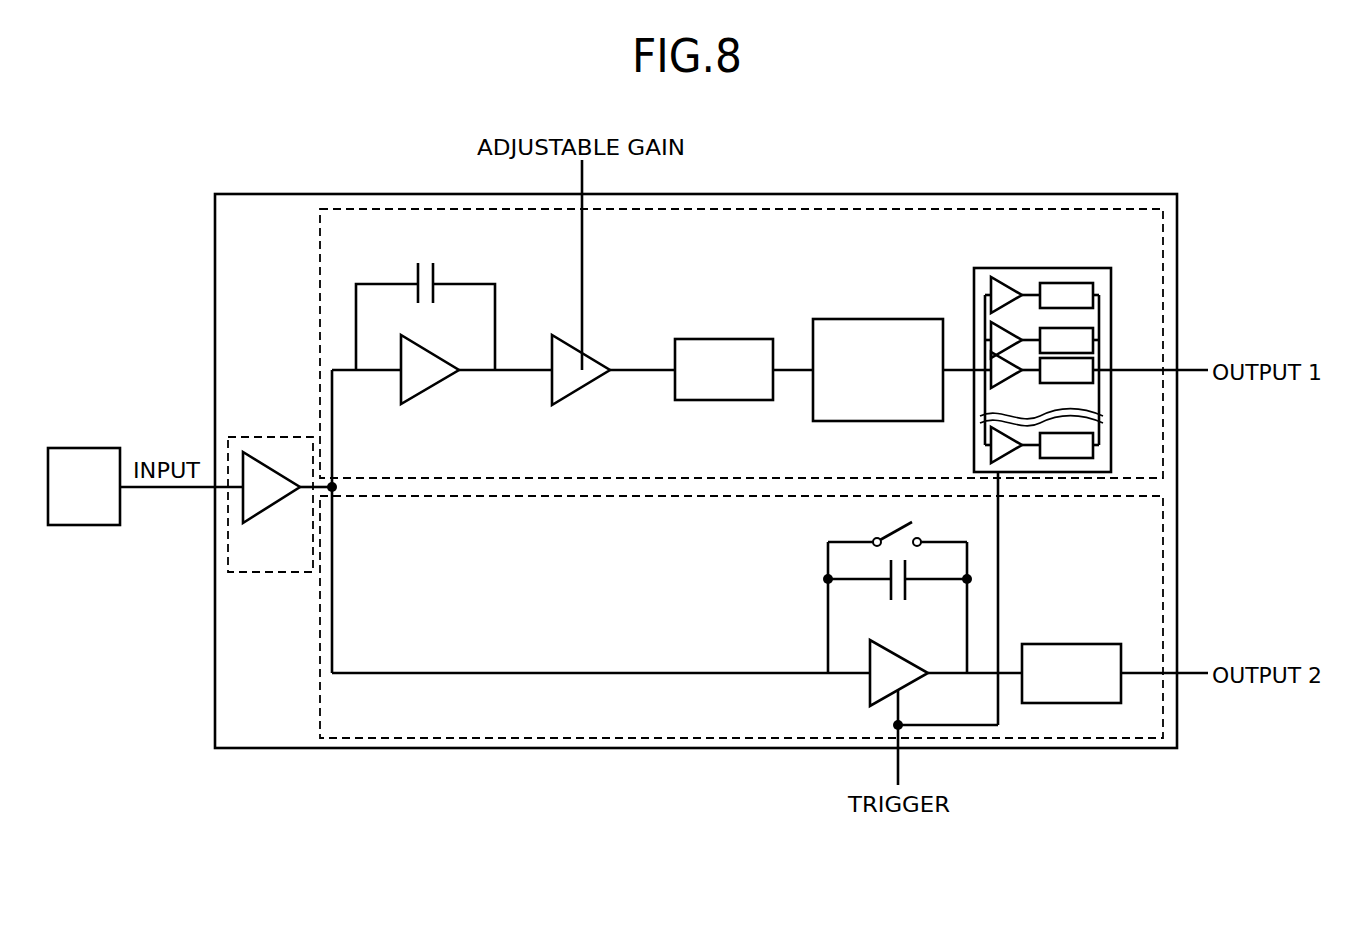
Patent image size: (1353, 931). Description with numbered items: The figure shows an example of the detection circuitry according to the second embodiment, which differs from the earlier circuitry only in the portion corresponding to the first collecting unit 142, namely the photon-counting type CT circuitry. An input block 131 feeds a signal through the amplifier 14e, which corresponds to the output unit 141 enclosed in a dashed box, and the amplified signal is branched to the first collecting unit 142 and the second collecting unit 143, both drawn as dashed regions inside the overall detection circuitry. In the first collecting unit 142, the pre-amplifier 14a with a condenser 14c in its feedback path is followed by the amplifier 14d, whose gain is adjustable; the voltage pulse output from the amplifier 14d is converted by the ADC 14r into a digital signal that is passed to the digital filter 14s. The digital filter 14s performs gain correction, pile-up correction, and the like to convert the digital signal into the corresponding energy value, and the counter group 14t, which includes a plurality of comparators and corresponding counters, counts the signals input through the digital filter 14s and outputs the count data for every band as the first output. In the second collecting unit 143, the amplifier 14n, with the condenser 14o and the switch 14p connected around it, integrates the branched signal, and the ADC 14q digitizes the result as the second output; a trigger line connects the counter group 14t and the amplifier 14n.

The signal source 131 is at (86, 448).
The output unit 141 is at (270, 572).
The first collecting unit 142 is at (1163, 268).
The second collecting unit 143 is at (1163, 567).
The pre-amplifier 14a is at (432, 387).
The condenser 14c is at (460, 277).
The amplifier 14d is at (585, 388).
The amplifier 14e is at (268, 510).
The ADC 14r is at (725, 339).
The digital filter 14s is at (898, 319).
The counter group 14t is at (1111, 320).
The amplifier 14n is at (903, 652).
The condenser 14o is at (884, 592).
The switch 14p is at (931, 535).
The analog-to-digital converter (ADC) 14q is at (1072, 644).